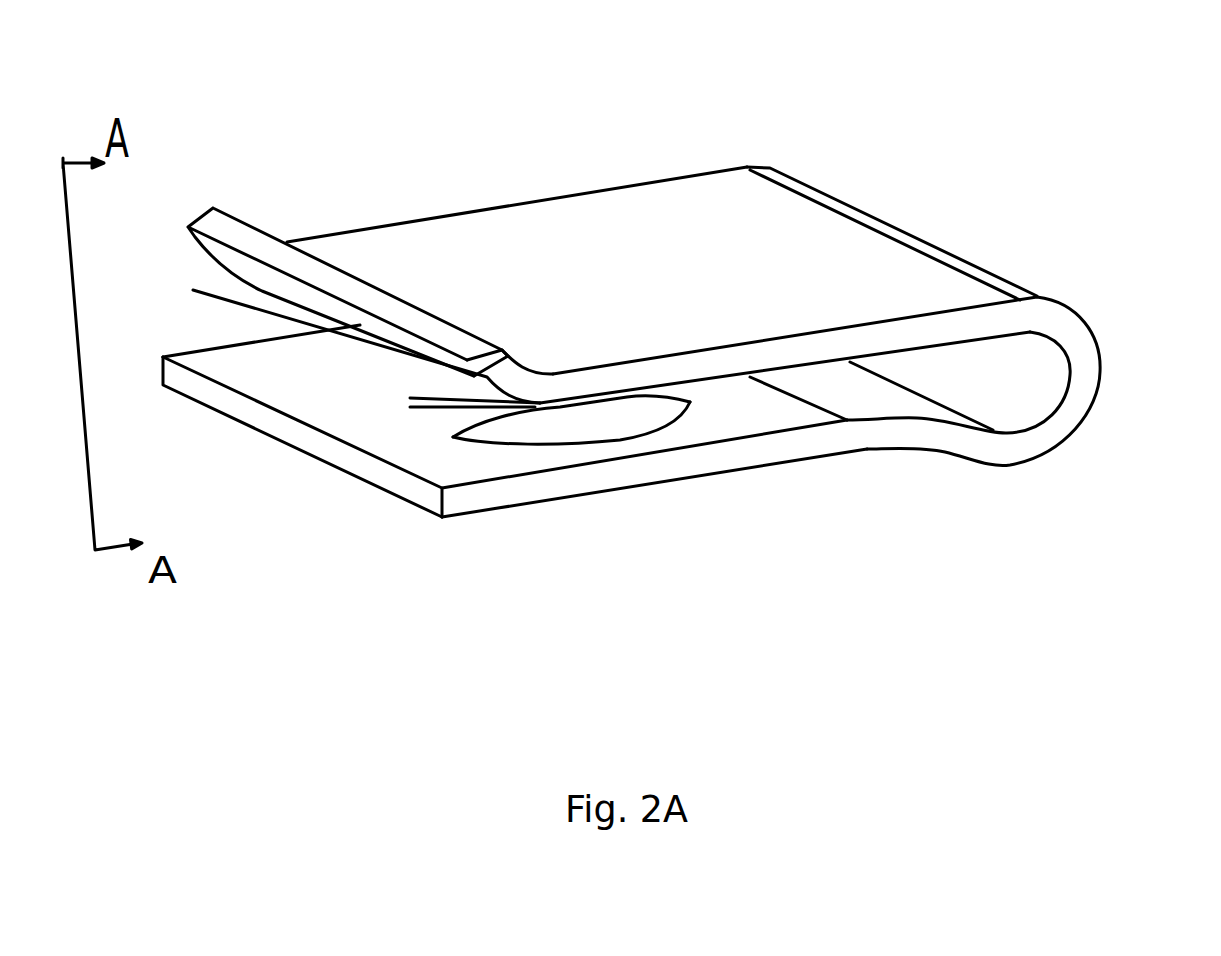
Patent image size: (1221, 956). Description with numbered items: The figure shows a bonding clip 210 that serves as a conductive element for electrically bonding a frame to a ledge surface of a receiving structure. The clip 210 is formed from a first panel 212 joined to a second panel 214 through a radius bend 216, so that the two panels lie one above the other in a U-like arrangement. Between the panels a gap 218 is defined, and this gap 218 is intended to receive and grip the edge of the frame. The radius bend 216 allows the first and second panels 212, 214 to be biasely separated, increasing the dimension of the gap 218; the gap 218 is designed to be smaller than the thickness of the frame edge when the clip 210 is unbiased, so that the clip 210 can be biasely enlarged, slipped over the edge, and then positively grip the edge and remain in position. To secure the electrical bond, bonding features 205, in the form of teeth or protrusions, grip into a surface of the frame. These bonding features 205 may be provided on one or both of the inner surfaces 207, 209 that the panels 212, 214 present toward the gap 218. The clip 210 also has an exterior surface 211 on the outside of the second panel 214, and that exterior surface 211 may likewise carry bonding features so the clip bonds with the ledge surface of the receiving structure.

The bonding features 205 is at (395, 403).
The inner surface 207 is at (432, 448).
The inner surface 209 is at (518, 352).
The bonding clip 210 is at (887, 127).
The exterior surface 211 is at (511, 511).
The first panel 212 is at (553, 164).
The second panel 214 is at (655, 507).
The radius bend 216 is at (1111, 357).
The gap 218 is at (747, 385).